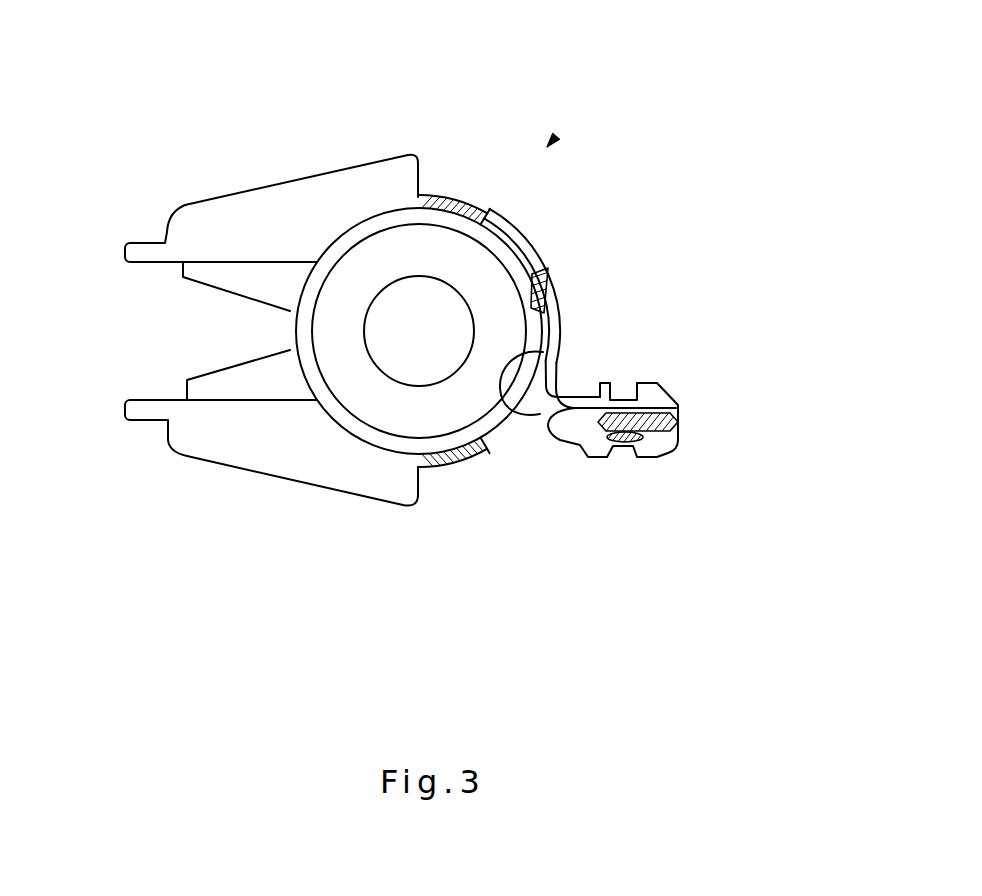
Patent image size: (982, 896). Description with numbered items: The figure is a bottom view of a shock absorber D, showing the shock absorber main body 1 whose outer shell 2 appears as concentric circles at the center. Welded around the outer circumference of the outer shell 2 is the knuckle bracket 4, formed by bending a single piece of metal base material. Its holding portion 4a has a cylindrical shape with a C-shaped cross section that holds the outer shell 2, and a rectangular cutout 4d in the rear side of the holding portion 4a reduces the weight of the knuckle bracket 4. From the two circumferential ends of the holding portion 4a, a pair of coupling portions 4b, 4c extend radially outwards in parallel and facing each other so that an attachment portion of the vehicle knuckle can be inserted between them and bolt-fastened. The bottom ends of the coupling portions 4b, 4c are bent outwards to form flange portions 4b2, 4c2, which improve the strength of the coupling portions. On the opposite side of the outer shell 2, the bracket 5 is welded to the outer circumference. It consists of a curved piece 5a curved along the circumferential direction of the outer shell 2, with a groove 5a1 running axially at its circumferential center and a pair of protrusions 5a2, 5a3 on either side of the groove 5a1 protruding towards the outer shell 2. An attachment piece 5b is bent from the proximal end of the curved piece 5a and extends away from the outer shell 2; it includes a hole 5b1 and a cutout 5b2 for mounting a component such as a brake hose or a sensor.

The shock absorber main body 1 is at (277, 325).
The outer shell 2 is at (390, 443).
The knuckle bracket 4 is at (208, 481).
The holding portion 4a is at (467, 199).
The coupling portion 4b is at (136, 233).
The flange portion 4b2 is at (221, 200).
The coupling portion 4c is at (137, 433).
The flange portion 4c2 is at (297, 460).
The cutout 4d is at (507, 220).
The bracket 5 is at (591, 263).
The curved piece 5a is at (588, 289).
The groove 5a1 is at (560, 334).
The protrusion 5a2 is at (542, 262).
The protrusion 5a3 is at (515, 415).
The attachment piece 5b is at (697, 377).
The hole 5b1 is at (615, 450).
The cutout 5b2 is at (680, 423).
The shock absorber D is at (554, 139).